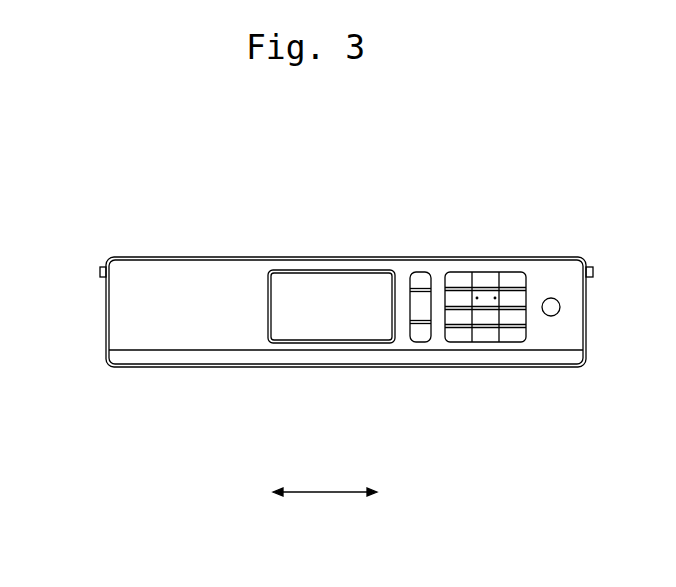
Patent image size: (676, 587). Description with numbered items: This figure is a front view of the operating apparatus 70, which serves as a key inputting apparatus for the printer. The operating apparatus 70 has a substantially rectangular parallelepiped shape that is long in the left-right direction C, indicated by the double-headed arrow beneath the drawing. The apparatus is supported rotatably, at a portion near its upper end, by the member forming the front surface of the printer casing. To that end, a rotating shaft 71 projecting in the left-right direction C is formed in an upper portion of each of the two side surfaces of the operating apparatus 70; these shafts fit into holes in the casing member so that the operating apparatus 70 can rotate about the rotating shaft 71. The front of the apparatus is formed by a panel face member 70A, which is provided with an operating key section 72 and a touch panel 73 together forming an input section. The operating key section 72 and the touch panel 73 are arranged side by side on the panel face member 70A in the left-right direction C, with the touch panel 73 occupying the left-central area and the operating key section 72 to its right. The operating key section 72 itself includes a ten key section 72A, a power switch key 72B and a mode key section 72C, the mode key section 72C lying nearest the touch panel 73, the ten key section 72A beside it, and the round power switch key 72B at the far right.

The operating apparatus 70 is at (233, 243).
The panel face member 70A is at (142, 340).
The rotating shaft 71 is at (101, 272).
The operating key section 72 is at (490, 314).
The ten key section 72A is at (485, 250).
The power switch key 72B is at (552, 279).
The mode key section 72C is at (420, 250).
The touch panel 73 is at (341, 362).
The left-right direction C is at (327, 492).